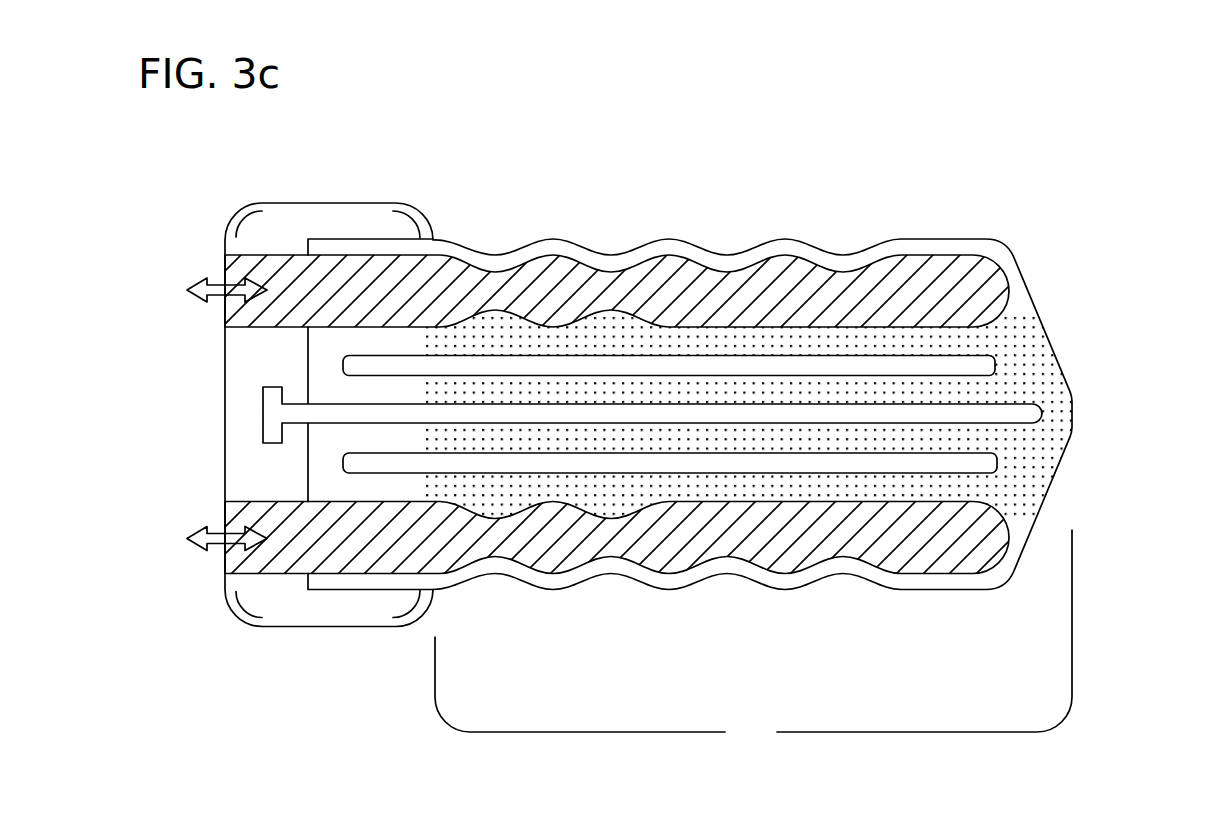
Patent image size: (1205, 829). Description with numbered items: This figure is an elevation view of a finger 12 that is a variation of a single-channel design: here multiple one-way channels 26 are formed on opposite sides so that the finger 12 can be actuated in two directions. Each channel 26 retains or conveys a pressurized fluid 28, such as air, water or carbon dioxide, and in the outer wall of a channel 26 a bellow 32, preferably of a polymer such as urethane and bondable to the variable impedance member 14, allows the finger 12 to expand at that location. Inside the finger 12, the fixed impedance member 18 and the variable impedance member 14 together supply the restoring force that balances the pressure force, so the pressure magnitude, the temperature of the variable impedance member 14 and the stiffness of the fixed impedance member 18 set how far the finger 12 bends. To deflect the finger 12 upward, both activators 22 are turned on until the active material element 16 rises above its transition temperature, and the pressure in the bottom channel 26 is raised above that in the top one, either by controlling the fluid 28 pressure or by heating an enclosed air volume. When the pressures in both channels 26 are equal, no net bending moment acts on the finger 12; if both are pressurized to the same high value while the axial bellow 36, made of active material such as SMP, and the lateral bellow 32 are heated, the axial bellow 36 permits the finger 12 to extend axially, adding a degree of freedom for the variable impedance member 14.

The finger 12 is at (1140, 208).
The variable impedance member 14 is at (753, 640).
The active material element 16 is at (635, 339).
The fixed impedance member 18 is at (263, 415).
The activator 22 is at (643, 473).
The channel 26 is at (934, 220).
The pressurized fluid 28 is at (747, 296).
The bellow 32 is at (592, 207).
The axial bellow 36 is at (527, 511).